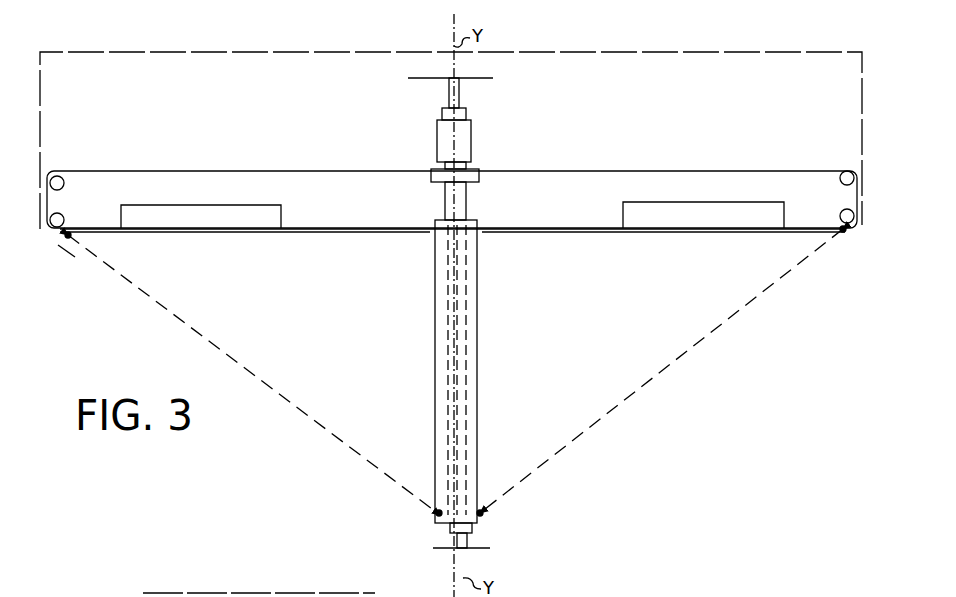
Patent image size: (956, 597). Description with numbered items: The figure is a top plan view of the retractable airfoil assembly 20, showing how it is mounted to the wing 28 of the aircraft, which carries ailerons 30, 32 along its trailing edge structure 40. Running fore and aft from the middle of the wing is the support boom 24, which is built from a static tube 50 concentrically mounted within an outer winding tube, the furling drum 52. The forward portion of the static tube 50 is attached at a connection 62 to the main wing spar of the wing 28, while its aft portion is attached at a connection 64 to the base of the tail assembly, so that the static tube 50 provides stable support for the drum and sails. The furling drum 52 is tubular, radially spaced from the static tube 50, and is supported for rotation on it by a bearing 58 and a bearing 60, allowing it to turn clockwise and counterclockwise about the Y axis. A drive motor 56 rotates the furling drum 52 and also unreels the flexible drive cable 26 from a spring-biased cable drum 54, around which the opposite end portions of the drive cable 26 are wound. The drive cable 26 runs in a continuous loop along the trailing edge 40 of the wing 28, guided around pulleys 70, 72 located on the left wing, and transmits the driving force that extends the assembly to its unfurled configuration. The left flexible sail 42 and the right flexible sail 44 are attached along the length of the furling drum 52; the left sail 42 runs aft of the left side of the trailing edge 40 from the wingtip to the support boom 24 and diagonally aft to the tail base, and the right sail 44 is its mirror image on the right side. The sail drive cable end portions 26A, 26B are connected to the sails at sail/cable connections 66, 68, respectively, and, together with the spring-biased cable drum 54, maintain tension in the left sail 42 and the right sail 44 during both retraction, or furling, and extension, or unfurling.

The retractable airfoil assembly 20 is at (646, 430).
The support boom 24 is at (435, 354).
The flexible drive cable 26 is at (327, 170).
The sail drive cable end portion 26A is at (50, 198).
The sail drive cable end portion 26B is at (842, 198).
The wing 28 is at (618, 80).
The aileron 30 is at (200, 209).
The aileron 32 is at (700, 205).
The trailing edge structure 40 is at (332, 232).
The left flexible sail 42 is at (355, 410).
The right flexible sail 44 is at (622, 370).
The static tube 50 is at (459, 94).
The furling drum 52 is at (435, 279).
The spring-biased cable drum 54 is at (479, 176).
The drive motor 56 is at (437, 150).
The bearing 58 is at (440, 112).
The bearing 60 is at (450, 527).
The connection 62 is at (450, 77).
The connection 64 is at (456, 548).
The sail/cable connection 66 is at (65, 238).
The sail/cable connection 68 is at (841, 234).
The pulley 70 is at (62, 176).
The pulley 72 is at (72, 231).